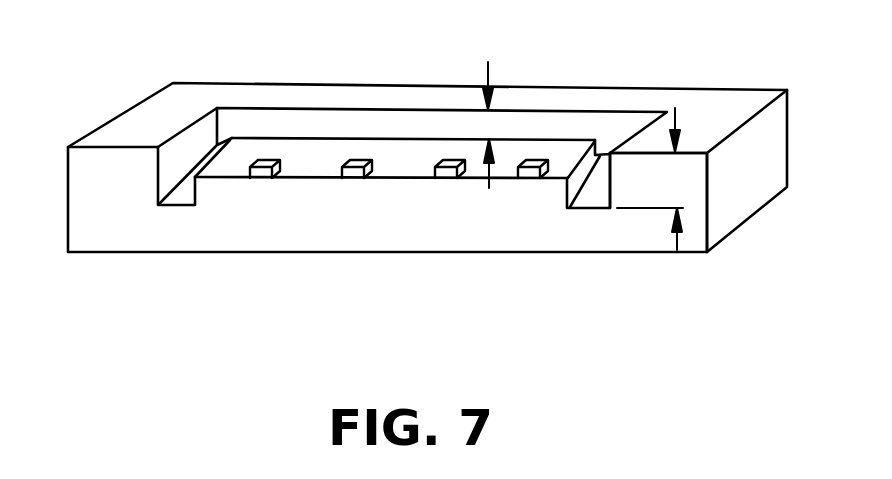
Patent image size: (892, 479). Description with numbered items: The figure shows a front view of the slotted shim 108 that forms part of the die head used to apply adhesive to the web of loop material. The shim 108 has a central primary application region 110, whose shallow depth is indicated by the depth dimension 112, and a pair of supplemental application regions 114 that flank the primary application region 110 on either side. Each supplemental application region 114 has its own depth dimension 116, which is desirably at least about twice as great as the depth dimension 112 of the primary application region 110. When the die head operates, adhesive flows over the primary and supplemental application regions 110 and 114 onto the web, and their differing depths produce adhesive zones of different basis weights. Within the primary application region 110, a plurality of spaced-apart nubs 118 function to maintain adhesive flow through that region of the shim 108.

The shim 108 is at (133, 123).
The primary application region 110 is at (332, 150).
The depth dimension of the primary application region 112 is at (483, 125).
The supplemental application regions 114 is at (183, 195).
The depth dimension of the supplemental application regions 116 is at (672, 180).
The nubs 118 is at (288, 177).